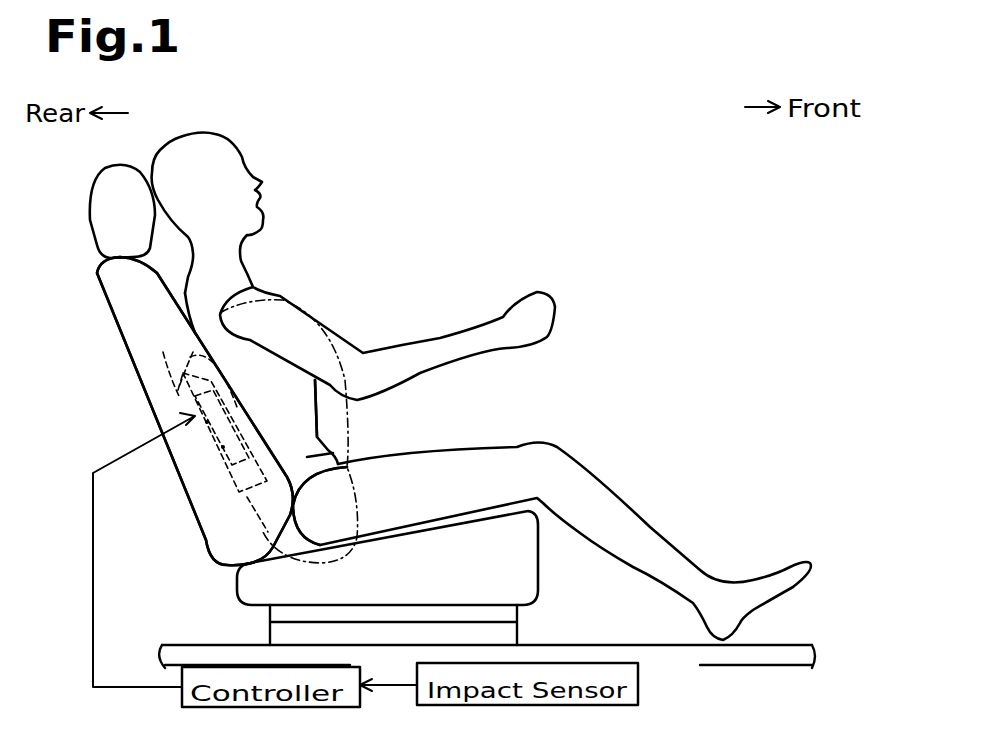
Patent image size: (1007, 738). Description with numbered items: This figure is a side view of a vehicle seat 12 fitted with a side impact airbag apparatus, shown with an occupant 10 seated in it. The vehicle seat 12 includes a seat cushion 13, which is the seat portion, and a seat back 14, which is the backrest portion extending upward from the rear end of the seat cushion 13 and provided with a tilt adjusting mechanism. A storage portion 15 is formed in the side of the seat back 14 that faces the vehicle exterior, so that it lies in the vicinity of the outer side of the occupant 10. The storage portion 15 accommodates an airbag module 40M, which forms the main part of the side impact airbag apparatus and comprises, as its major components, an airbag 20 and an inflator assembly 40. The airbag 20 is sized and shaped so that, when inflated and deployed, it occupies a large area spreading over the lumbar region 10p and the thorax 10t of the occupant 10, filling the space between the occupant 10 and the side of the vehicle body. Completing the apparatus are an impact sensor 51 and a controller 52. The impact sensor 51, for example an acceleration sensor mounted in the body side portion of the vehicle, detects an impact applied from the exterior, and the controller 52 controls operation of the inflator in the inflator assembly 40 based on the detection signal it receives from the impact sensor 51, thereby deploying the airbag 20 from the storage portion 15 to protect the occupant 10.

The occupant 10 is at (165, 145).
The thorax 10t is at (333, 384).
The lumbar region 10p is at (290, 543).
The vehicle seat 12 is at (143, 392).
The seat back 14 is at (177, 411).
The seat cushion 13 is at (237, 592).
The storage portion 15 is at (207, 428).
The airbag 20 is at (217, 480).
The inflator assembly 40 is at (248, 433).
The airbag module 40M is at (238, 410).
The impact sensor 51 is at (630, 664).
The controller 52 is at (350, 664).